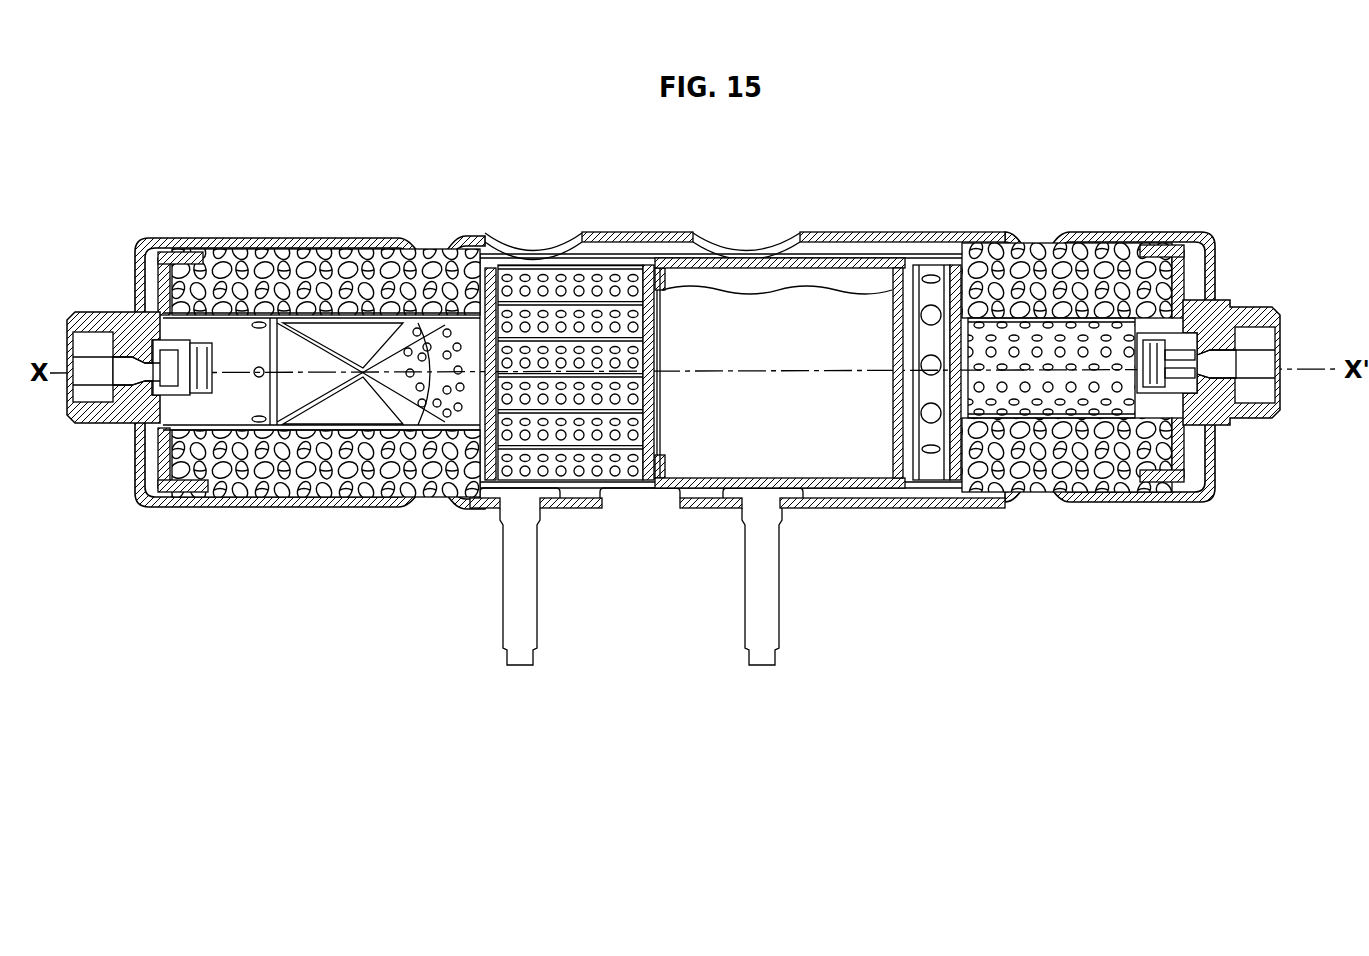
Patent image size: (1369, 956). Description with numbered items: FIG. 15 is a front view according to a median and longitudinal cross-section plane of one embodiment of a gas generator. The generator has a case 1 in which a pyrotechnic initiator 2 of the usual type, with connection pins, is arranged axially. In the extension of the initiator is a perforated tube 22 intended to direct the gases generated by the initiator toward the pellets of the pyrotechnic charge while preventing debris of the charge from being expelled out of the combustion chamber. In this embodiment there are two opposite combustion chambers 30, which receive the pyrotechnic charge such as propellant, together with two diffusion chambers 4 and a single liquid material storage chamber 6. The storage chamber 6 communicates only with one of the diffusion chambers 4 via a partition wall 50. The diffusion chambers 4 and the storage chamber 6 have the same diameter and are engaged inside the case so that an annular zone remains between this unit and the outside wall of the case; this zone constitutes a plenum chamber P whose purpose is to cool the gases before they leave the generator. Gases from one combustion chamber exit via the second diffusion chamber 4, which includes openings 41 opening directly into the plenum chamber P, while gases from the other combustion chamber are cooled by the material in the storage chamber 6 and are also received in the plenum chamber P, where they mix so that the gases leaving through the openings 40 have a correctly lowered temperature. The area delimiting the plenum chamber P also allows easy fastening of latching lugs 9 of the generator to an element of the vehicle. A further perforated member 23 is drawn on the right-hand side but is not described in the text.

The case 1 is at (824, 177).
The pyrotechnic initiator 2 is at (163, 350).
The diffusion chamber 4 is at (510, 430).
The storage chamber 6 is at (810, 478).
The latching lugs 9 is at (520, 600).
The perforated tube 22 is at (222, 408).
The perforated tube 23 is at (1027, 396).
The combustion chamber 30 is at (230, 262).
The openings 40 is at (535, 226).
The openings 41 is at (933, 308).
The partition wall 50 is at (645, 458).
The plenum chamber P is at (893, 248).